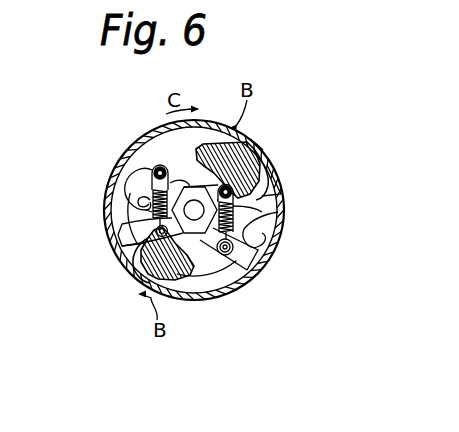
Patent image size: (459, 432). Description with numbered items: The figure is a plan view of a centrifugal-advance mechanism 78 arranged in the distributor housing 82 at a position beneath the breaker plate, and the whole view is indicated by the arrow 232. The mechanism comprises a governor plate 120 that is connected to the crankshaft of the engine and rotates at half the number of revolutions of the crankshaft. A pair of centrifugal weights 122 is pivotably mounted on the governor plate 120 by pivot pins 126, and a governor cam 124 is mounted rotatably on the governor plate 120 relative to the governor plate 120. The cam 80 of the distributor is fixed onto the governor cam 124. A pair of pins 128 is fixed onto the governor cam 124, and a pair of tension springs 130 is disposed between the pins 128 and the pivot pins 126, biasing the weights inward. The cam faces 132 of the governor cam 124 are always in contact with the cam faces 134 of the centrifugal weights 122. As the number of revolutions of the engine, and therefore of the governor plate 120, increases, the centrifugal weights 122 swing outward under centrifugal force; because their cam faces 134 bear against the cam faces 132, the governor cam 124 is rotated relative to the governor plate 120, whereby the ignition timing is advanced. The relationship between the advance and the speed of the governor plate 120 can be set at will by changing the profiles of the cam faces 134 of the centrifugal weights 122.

The clutch assembly 78 is at (115, 158).
The cam 80 is at (205, 268).
The distributor housing 82 is at (284, 187).
The governor plate 120 is at (127, 203).
The centrifugal weights 122 is at (262, 148).
The governor cam 124 is at (120, 242).
The pivot pins 126 is at (150, 198).
The pins 128 is at (168, 162).
The tension springs 130 is at (136, 178).
The cam faces of the governor cam 132 is at (264, 194).
The cam faces of the centrifugal weights 134 is at (255, 161).
The view direction arrow 232 is at (270, 100).